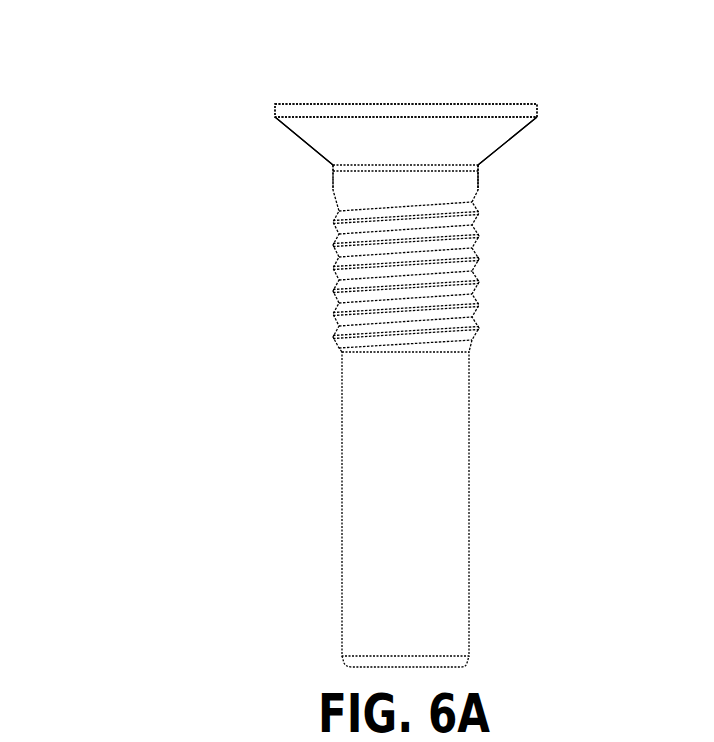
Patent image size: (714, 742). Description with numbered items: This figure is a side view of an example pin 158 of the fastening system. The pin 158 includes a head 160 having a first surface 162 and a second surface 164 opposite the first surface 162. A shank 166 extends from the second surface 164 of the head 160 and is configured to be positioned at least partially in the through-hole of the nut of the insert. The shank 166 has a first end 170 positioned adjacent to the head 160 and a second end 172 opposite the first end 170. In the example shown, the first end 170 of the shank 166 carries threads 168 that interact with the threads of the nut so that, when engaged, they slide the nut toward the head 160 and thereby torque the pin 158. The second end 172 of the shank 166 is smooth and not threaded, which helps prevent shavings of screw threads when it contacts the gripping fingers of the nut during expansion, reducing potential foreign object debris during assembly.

The pin 158 is at (92, 135).
The head 160 is at (497, 125).
The first surface 162 is at (352, 101).
The second surface 164 is at (360, 173).
The shank 166 is at (463, 392).
The threads 168 is at (479, 260).
The first end 170 is at (481, 173).
The second end 172 is at (333, 660).